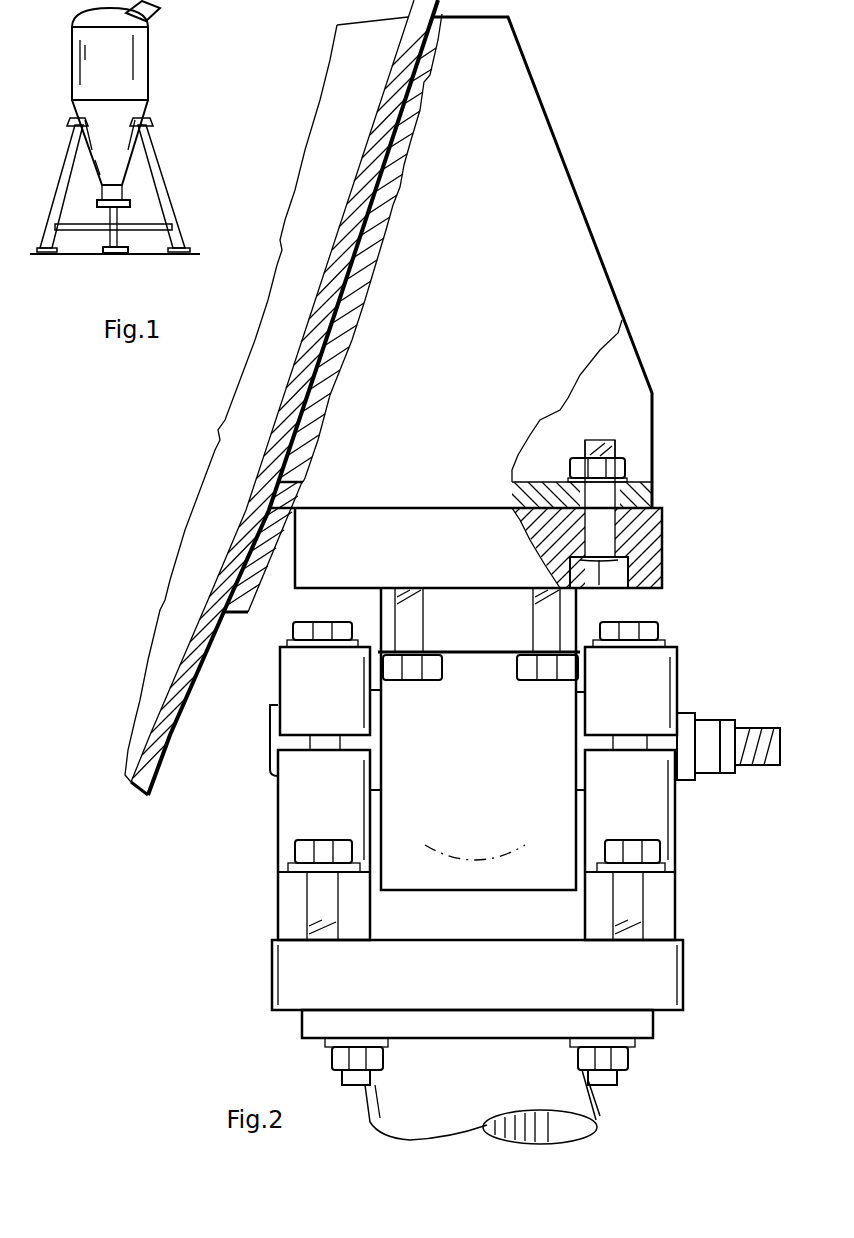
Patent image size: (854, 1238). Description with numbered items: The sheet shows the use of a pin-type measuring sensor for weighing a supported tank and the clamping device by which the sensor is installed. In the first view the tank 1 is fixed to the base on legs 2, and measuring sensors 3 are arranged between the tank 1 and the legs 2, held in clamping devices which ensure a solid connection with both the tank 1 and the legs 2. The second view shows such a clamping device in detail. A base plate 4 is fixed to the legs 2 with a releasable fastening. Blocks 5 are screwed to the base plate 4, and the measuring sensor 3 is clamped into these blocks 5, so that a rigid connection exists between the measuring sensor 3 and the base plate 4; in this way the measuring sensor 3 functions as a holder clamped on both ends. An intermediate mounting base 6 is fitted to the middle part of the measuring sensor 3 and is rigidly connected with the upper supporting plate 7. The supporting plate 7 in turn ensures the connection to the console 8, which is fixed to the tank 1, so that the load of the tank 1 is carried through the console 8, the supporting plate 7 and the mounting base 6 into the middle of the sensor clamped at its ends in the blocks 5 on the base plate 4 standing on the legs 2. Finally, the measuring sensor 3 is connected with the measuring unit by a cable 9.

In FIG. 1, the tank 1 is at (133, 60).
In FIG. 2, the tank 1 is at (337, 75).
In FIG. 1, the legs 2 is at (65, 163).
In FIG. 2, the legs 2 is at (598, 1090).
In FIG. 1, the measuring sensor 3 is at (69, 105).
In FIG. 2, the measuring sensor 3 is at (377, 777).
In FIG. 2, the base plate 4 is at (287, 960).
In FIG. 2, the blocks 5 is at (297, 675).
In FIG. 2, the intermediate mounting base 6 is at (418, 794).
In FIG. 2, the upper supporting plate 7 is at (660, 540).
In FIG. 2, the console 8 is at (504, 290).
In FIG. 2, the cable 9 is at (738, 728).